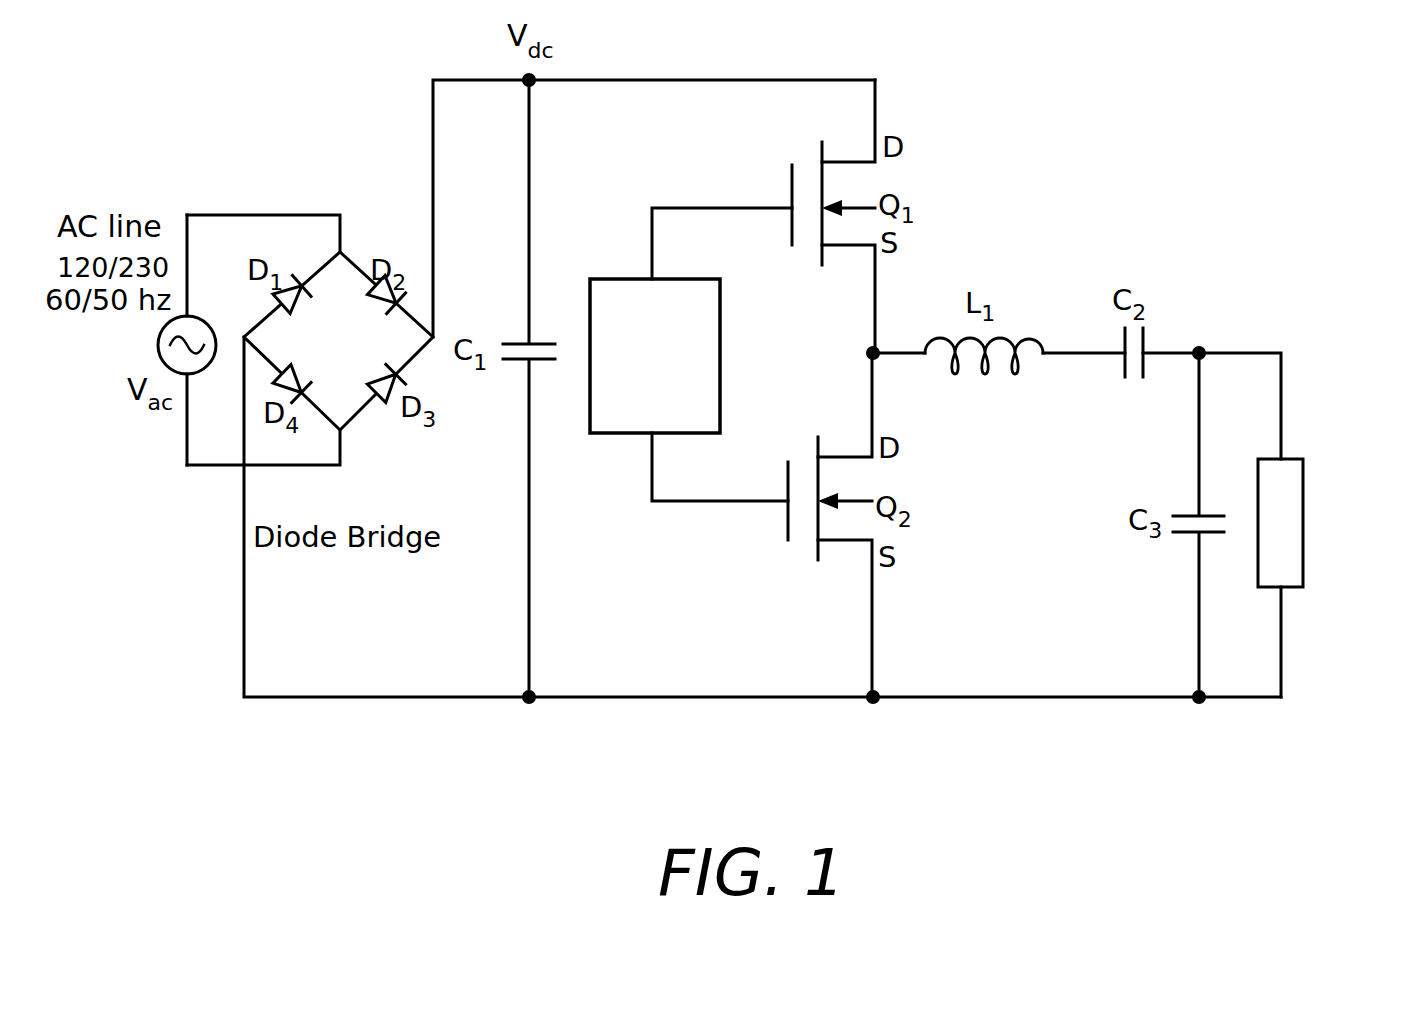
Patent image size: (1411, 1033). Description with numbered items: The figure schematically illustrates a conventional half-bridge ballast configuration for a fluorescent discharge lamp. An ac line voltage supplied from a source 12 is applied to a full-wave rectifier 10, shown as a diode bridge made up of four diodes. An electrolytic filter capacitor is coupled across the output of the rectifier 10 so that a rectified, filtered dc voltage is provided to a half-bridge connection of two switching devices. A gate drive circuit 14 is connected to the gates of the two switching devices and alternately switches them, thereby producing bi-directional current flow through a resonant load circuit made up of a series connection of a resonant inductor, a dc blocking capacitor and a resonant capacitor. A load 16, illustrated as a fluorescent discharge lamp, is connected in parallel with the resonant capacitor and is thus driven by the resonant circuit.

The full-wave rectifier 10 is at (394, 206).
The source 12 is at (205, 372).
The gate drive circuit 14 is at (669, 430).
The load 16 is at (1303, 480).